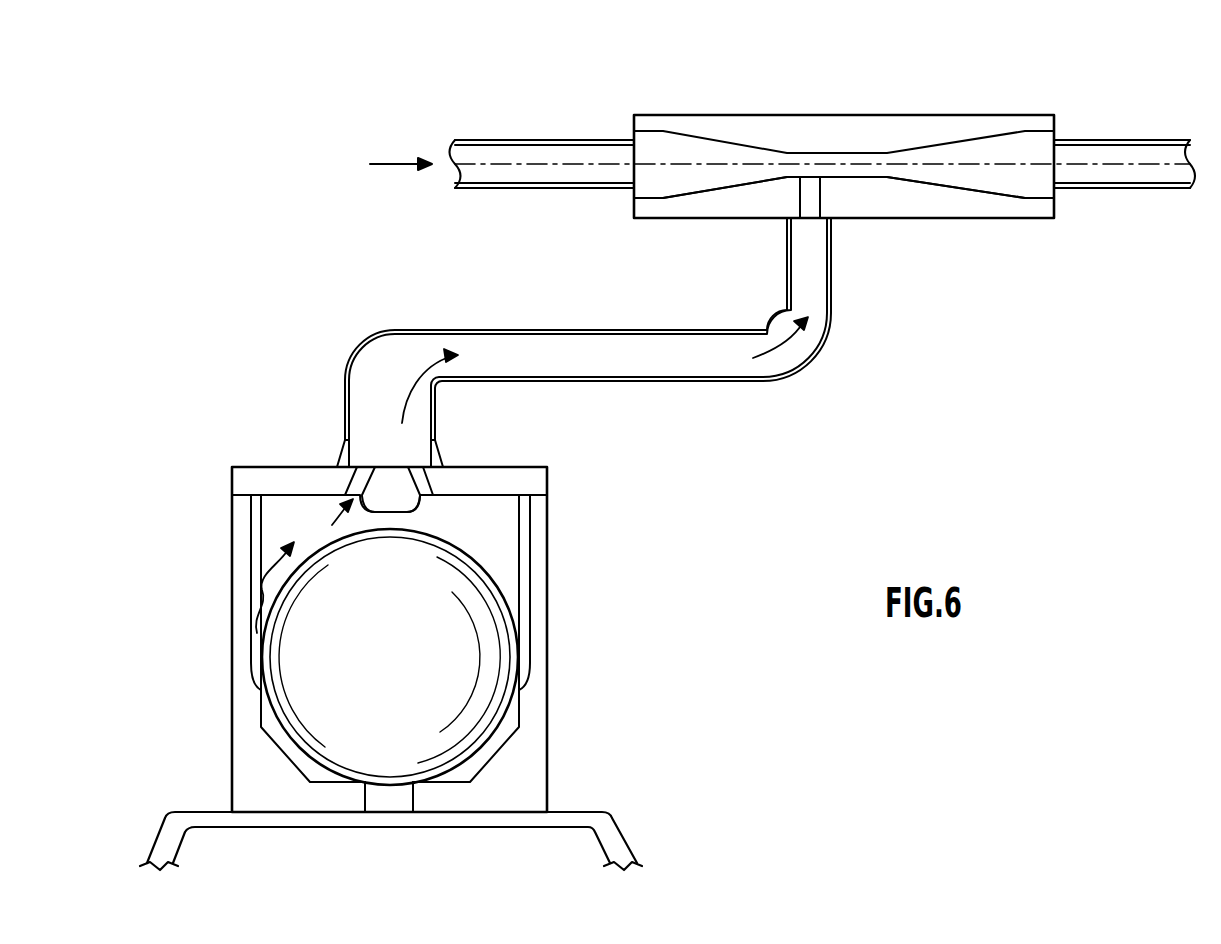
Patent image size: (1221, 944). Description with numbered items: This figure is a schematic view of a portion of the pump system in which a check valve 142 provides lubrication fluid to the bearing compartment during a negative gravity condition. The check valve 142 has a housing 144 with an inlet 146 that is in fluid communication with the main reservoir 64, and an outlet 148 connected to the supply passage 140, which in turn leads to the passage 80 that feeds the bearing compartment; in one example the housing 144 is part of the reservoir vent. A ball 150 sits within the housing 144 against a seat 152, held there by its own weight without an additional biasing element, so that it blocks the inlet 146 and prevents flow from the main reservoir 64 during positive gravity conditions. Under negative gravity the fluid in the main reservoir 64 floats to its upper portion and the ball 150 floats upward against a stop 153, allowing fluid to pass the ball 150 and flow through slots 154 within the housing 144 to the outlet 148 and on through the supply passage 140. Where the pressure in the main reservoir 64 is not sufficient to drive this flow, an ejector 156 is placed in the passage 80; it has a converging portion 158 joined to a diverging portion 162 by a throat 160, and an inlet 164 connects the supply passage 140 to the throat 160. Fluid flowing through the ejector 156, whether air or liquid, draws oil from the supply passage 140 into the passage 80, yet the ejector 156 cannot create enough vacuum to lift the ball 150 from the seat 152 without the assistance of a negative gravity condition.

The main reservoir 64 is at (614, 829).
The passage 80 is at (1116, 140).
The supply passage 140 is at (489, 321).
The check valve 142 is at (258, 700).
The housing 144 is at (530, 777).
The inlet 146 is at (405, 800).
The outlet 148 is at (358, 478).
The ball 150 is at (497, 640).
The seat 152 is at (366, 783).
The stop 153 is at (405, 513).
The slots 154 is at (525, 582).
The ejector 156 is at (955, 114).
The converging portion 158 is at (705, 185).
The throat 160 is at (860, 180).
The diverging portion 162 is at (996, 187).
The inlet 164 is at (820, 213).